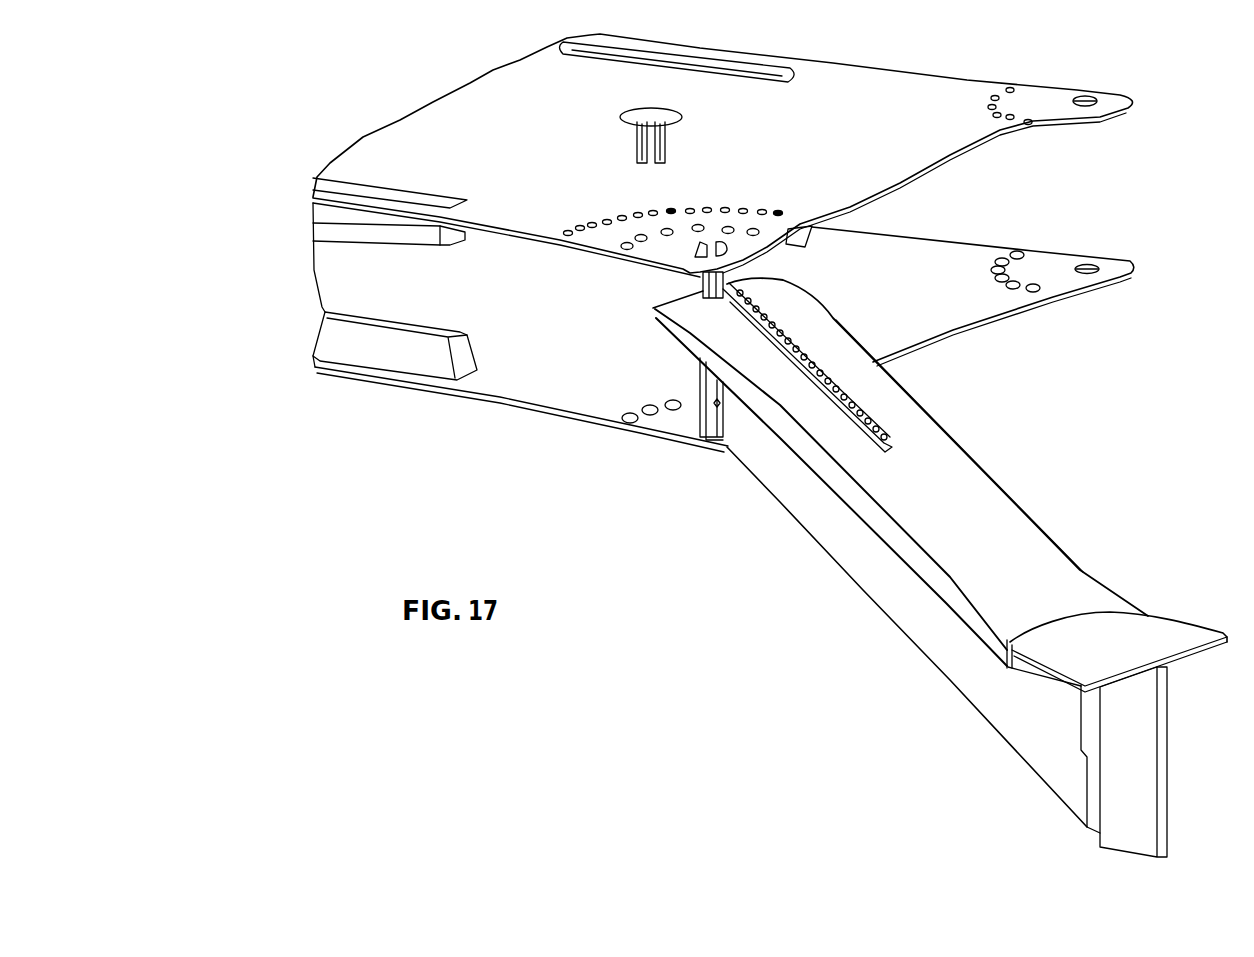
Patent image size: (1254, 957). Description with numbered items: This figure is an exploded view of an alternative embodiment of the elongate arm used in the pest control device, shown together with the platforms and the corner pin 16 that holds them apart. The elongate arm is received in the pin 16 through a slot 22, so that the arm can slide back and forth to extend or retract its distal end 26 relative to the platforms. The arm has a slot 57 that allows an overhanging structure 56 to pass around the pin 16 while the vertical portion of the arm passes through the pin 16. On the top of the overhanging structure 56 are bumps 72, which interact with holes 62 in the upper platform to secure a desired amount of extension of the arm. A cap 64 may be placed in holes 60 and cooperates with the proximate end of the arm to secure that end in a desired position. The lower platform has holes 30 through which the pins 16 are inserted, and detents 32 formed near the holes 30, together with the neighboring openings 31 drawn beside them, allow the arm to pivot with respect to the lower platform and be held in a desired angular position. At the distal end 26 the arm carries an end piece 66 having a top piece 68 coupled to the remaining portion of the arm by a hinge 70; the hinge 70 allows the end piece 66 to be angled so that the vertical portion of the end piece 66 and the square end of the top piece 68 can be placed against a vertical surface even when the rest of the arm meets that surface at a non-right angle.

The pin 16 is at (700, 376).
The slot 22 is at (701, 283).
The distal end 26 is at (1126, 718).
The holes 30 is at (1084, 99).
The apertures 31 is at (1017, 251).
The detents 32 is at (650, 406).
The overhanging structure 56 is at (1000, 527).
The slot 57 is at (807, 367).
The holes 60 is at (640, 216).
The holes 62 is at (753, 230).
The cap 64 is at (677, 114).
The end piece 66 is at (1147, 698).
The top piece 68 is at (1163, 628).
The hinge 70 is at (1083, 752).
The bumps 72 is at (839, 398).